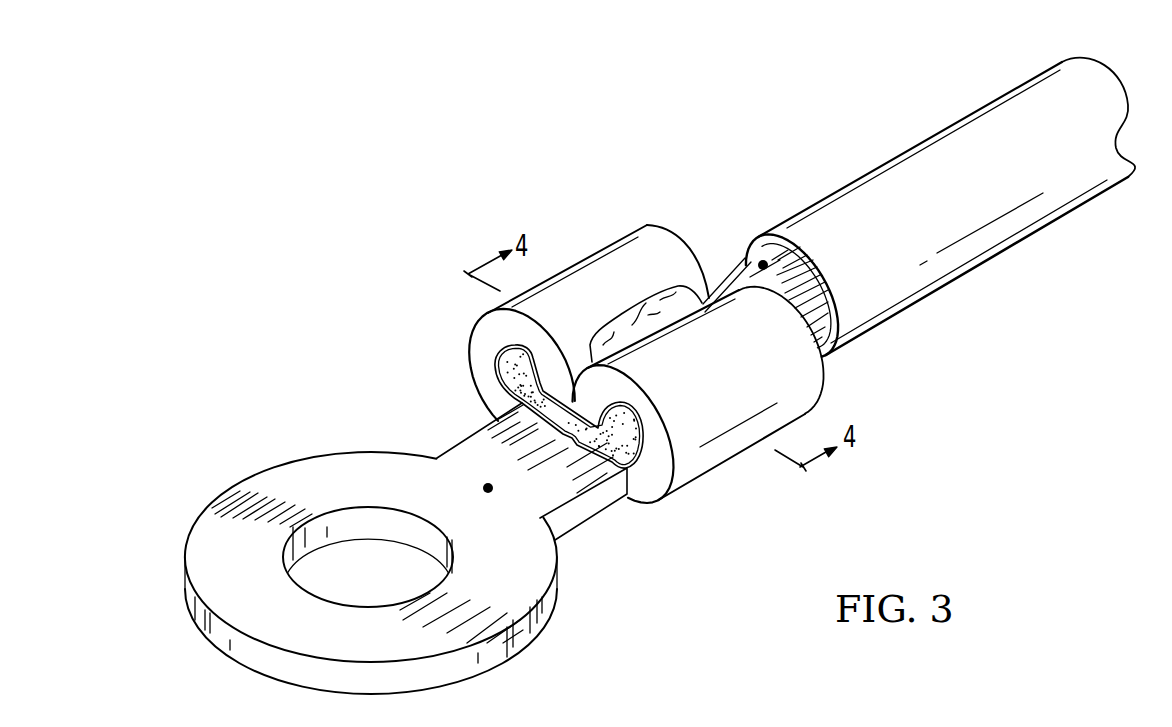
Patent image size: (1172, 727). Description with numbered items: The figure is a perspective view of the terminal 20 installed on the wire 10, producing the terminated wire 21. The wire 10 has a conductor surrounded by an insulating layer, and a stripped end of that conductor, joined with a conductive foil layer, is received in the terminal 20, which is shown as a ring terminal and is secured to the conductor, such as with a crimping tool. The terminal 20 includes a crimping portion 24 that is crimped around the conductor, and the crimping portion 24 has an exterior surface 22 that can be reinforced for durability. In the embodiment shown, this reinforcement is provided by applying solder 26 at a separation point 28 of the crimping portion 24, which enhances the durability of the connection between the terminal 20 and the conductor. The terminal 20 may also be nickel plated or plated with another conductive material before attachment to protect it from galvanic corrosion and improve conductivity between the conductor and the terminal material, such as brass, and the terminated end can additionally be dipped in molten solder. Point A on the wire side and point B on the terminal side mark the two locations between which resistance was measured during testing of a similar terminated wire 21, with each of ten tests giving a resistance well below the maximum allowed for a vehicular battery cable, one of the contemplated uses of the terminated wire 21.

The wire 10 is at (898, 115).
The terminal 20 is at (311, 470).
The terminated wire 21 is at (565, 226).
The exterior surface 22 is at (812, 380).
The crimping portion 24 is at (745, 478).
The solder 26 is at (650, 318).
The separation point 28 is at (571, 360).
The point A is at (757, 250).
The point B is at (480, 475).